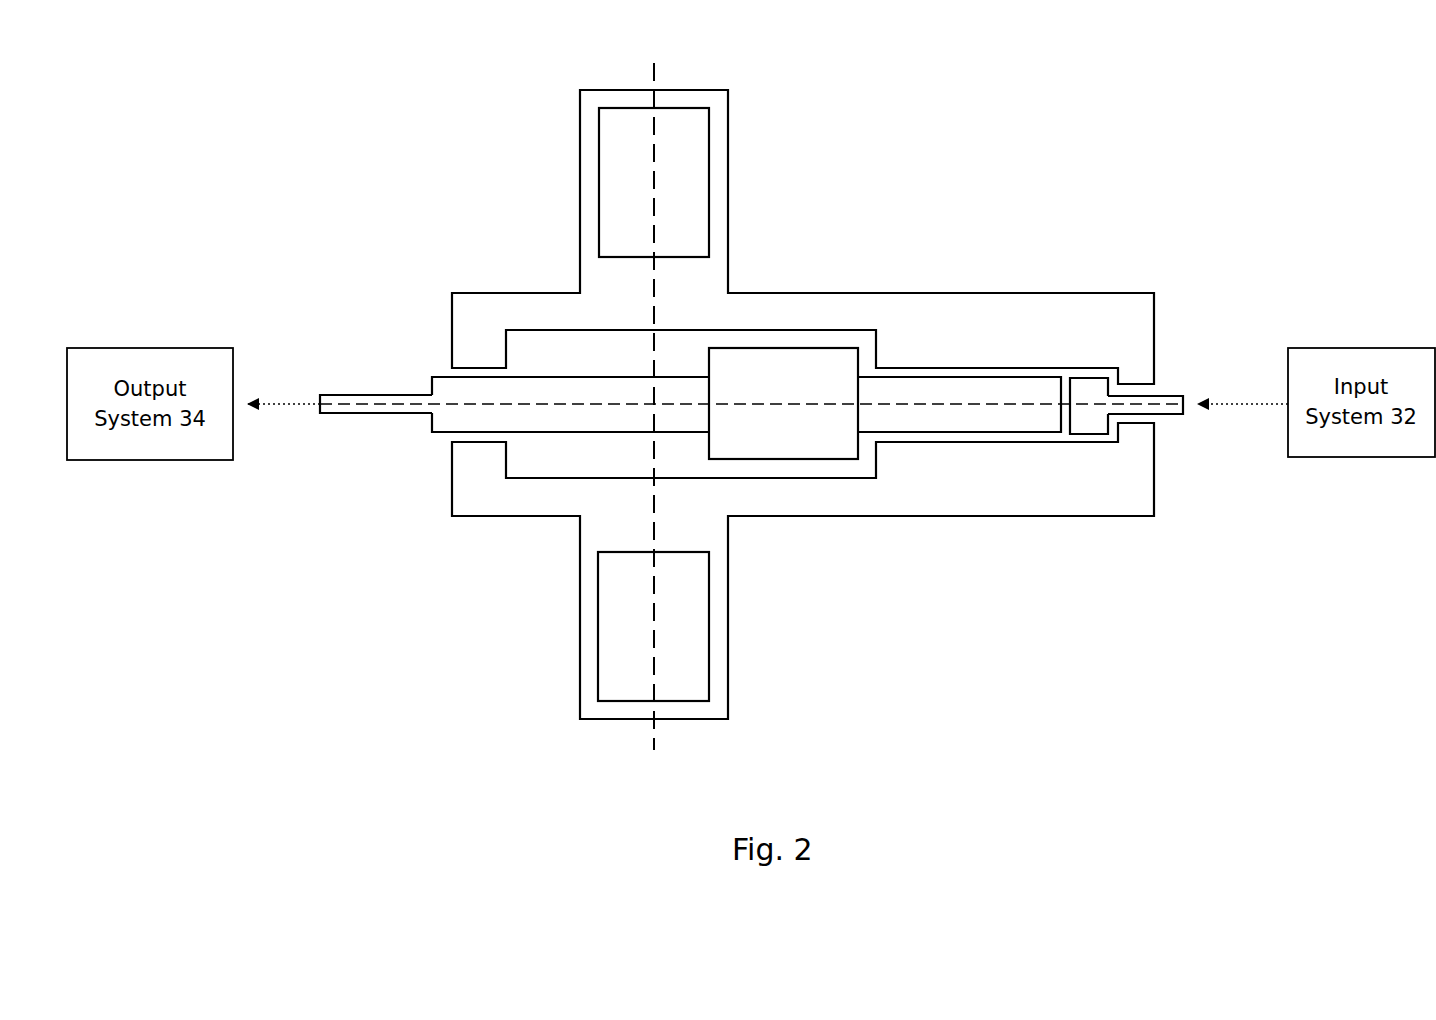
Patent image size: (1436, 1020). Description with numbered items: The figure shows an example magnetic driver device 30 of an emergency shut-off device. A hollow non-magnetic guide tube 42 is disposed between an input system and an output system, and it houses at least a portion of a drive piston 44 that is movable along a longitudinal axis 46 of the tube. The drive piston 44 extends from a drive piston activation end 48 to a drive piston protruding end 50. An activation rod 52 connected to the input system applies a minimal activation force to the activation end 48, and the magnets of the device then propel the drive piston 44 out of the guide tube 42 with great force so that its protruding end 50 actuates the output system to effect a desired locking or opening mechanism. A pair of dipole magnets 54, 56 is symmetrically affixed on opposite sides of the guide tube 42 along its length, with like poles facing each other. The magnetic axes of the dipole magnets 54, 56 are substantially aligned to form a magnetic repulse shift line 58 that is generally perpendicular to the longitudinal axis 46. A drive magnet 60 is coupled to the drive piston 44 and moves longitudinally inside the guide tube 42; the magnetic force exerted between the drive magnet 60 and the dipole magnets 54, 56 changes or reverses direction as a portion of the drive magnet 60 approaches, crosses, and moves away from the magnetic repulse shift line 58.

The magnetic driver device 30 is at (428, 145).
The hollow non-magnetic guide tube 42 is at (1050, 303).
The drive piston 44 is at (541, 385).
The longitudinal axis 46 is at (930, 405).
The drive piston activation end 48 is at (1062, 435).
The drive piston protruding end 50 is at (322, 413).
The activation rod 52 is at (1163, 393).
The dipole magnet 54 is at (706, 108).
The dipole magnet 56 is at (695, 677).
The magnetic repulse shift line 58 is at (655, 740).
The drive magnet 60 is at (778, 445).